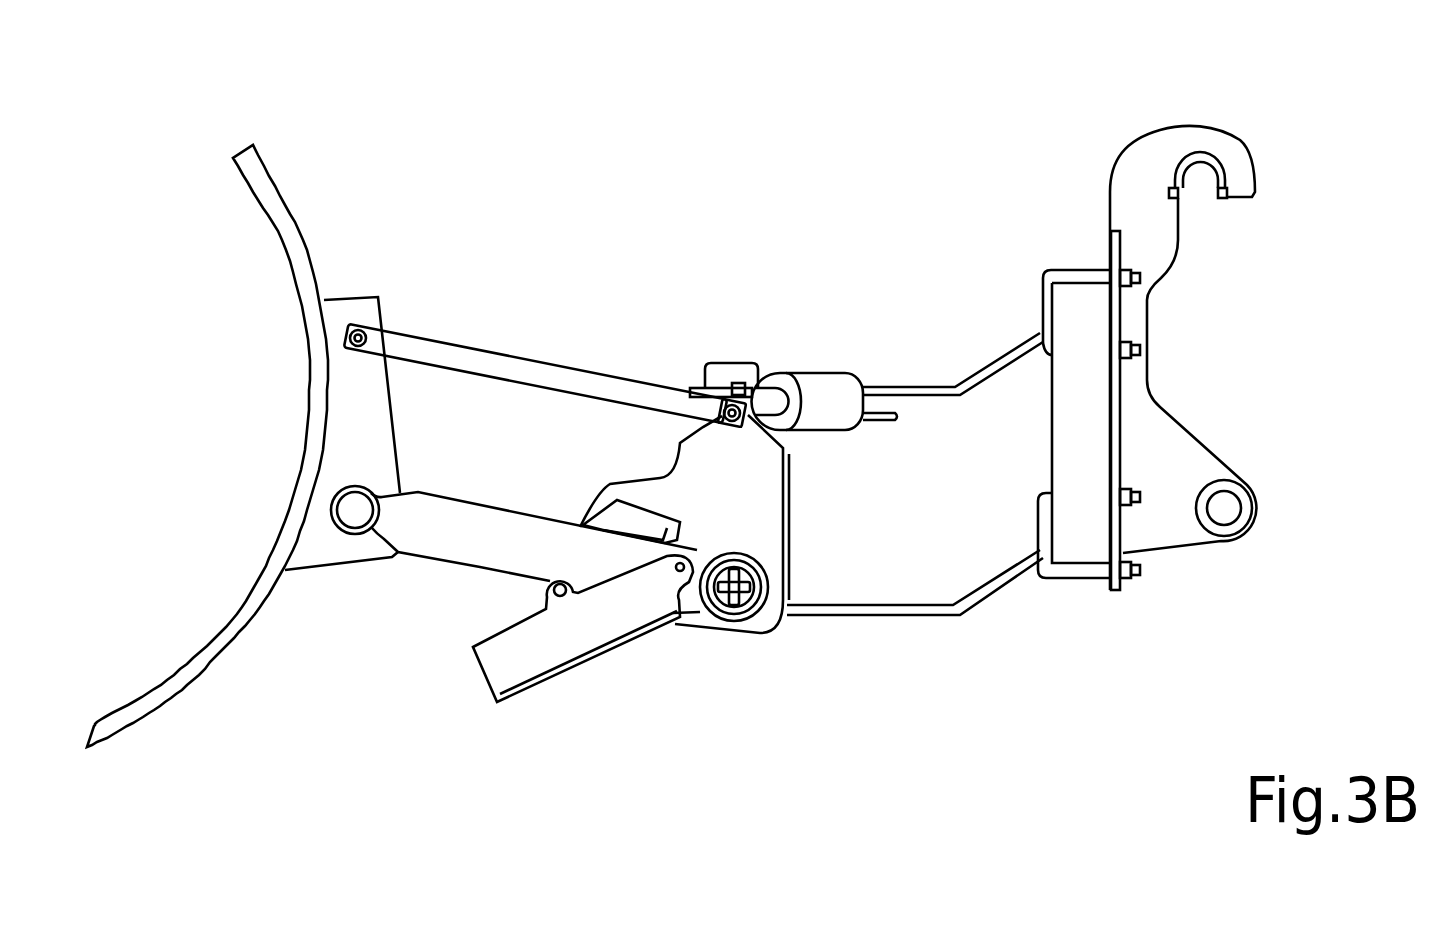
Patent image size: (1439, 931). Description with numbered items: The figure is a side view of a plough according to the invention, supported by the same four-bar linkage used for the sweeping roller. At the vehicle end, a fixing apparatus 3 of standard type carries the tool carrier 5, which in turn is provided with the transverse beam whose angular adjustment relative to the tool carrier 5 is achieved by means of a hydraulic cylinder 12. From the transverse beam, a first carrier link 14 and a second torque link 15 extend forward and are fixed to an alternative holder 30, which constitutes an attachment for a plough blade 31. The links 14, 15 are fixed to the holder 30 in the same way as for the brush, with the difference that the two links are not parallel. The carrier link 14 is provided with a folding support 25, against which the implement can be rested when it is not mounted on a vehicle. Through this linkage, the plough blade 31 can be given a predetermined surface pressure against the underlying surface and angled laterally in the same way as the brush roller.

The plough blade 31 is at (233, 619).
The holder 30 is at (370, 410).
The second torque link 15 is at (548, 378).
The first carrier link 14 is at (460, 550).
The folding support 25 is at (577, 643).
The hydraulic cylinder 12 is at (818, 385).
The tool carrier 5 is at (998, 392).
The fixing apparatus 3 is at (1178, 325).